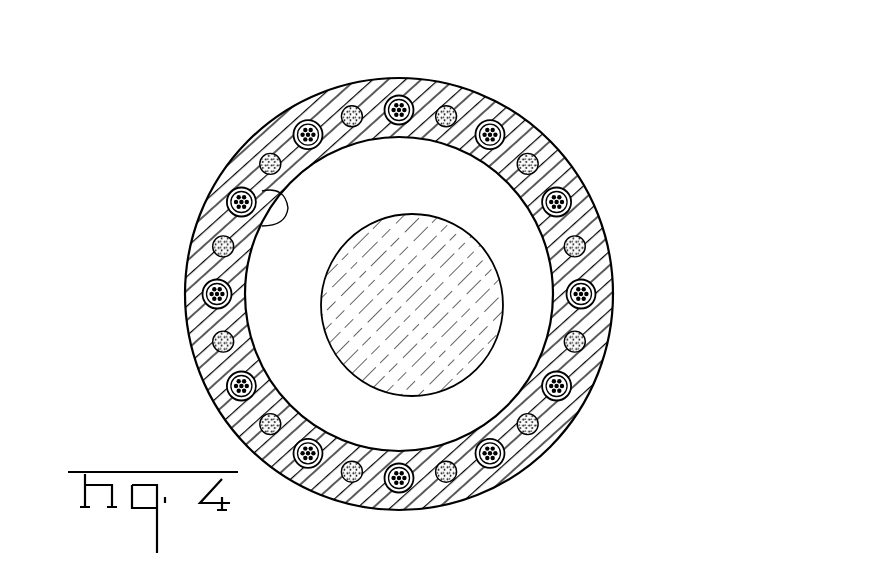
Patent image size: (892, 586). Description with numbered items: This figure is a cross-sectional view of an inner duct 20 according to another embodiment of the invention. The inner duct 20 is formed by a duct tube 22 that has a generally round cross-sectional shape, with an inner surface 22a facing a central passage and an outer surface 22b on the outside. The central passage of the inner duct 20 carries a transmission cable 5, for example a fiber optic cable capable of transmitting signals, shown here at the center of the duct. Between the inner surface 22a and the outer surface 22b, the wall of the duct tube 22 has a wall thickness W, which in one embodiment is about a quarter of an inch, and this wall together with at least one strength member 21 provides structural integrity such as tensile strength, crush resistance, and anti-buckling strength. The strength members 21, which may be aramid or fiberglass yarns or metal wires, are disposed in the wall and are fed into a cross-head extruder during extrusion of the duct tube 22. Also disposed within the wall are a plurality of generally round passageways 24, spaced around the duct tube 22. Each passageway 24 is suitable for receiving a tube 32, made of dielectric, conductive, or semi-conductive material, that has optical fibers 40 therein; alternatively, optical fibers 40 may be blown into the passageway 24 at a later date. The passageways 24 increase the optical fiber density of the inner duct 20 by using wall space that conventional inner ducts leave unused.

The inner duct 20 is at (402, 264).
The duct tube 22 is at (379, 278).
The inner surface 22a is at (262, 191).
The outer surface 22b is at (240, 151).
The passageway 24 is at (405, 102).
The strength member 21 is at (270, 424).
The tube 32 is at (572, 168).
The optical fiber 40 is at (592, 287).
The transmission cable 5 is at (480, 363).
The wall thickness W is at (305, 315).